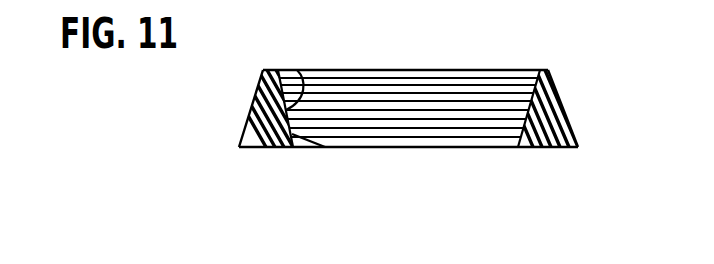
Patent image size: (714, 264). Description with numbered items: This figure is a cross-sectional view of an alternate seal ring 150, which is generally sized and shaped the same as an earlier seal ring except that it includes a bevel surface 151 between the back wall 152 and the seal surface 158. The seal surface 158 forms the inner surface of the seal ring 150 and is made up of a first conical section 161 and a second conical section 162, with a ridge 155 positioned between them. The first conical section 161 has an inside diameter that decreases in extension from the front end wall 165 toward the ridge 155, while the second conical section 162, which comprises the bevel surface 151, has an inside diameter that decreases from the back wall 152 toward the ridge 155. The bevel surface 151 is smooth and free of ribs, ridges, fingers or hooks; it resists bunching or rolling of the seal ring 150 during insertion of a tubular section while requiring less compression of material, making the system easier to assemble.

The seal ring 150 is at (410, 148).
The bevel surface 151 is at (302, 146).
The back wall 152 is at (260, 148).
The ridge 155 is at (300, 138).
The seal surface 158 is at (443, 95).
The first conical section 161 is at (297, 70).
The second conical section 162 is at (290, 146).
The front end wall 165 is at (540, 70).